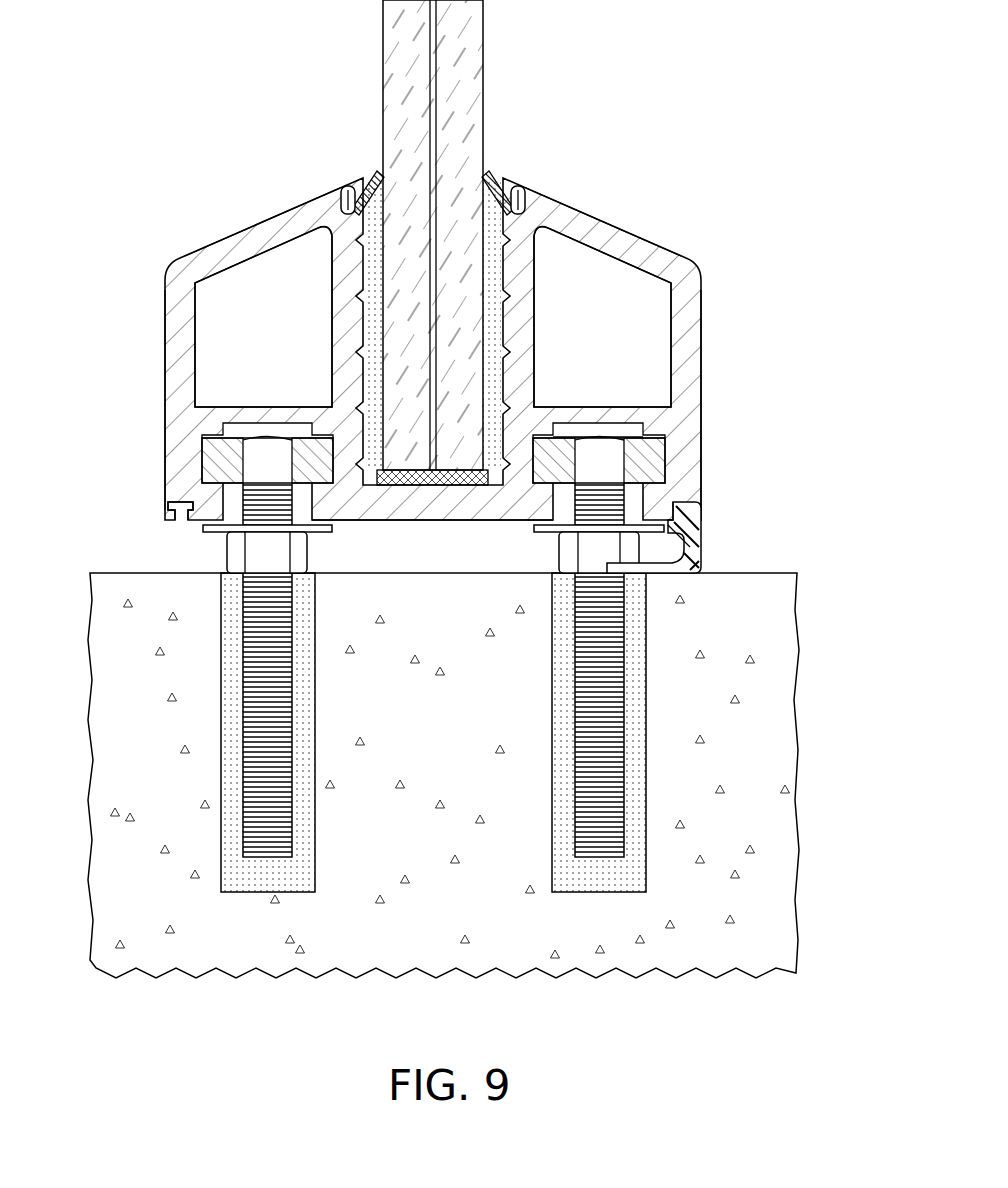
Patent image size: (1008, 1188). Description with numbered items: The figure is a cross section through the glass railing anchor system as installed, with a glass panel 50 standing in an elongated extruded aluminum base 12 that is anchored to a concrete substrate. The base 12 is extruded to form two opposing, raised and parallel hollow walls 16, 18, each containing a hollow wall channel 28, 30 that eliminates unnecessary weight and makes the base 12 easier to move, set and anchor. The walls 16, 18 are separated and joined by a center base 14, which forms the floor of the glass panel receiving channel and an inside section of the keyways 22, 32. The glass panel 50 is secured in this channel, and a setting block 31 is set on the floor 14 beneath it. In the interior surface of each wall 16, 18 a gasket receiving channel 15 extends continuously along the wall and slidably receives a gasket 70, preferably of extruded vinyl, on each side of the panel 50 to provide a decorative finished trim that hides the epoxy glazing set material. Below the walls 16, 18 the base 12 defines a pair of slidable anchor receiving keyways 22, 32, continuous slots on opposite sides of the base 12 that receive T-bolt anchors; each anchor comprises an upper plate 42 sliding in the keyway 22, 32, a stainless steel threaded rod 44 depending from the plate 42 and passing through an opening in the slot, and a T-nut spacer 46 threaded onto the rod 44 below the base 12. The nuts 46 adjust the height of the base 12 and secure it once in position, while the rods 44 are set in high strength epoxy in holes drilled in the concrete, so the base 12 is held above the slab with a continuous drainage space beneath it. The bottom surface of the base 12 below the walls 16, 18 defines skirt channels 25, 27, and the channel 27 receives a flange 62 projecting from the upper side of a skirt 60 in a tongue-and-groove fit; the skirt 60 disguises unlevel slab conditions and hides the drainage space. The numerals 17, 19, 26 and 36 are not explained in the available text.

The elongated aluminum base 12 is at (706, 268).
The center base 14 is at (402, 520).
The gasket receiving channel 15 is at (343, 190).
The first wall 16 is at (165, 320).
The first top wall 17 is at (248, 222).
The second wall 18 is at (701, 320).
The second top wall 19 is at (621, 222).
The anchor receiving keyway 22 is at (202, 468).
The skirt channel 25 is at (181, 512).
The first plate 26 is at (230, 430).
The skirt channel 27 is at (685, 505).
The hollow wall channel 28 is at (280, 335).
The hollow wall channel 30 is at (613, 335).
The setting block 31 is at (460, 470).
The anchor receiving keyway 32 is at (665, 473).
The second plate 36 is at (636, 430).
The upper plate 42 is at (660, 452).
The threaded rod 44 is at (243, 727).
The T-nut spacer 46 is at (559, 556).
The glass panel 50 is at (483, 66).
The skirt 60 is at (701, 540).
The flange 62 is at (690, 518).
The gasket 70 is at (375, 172).